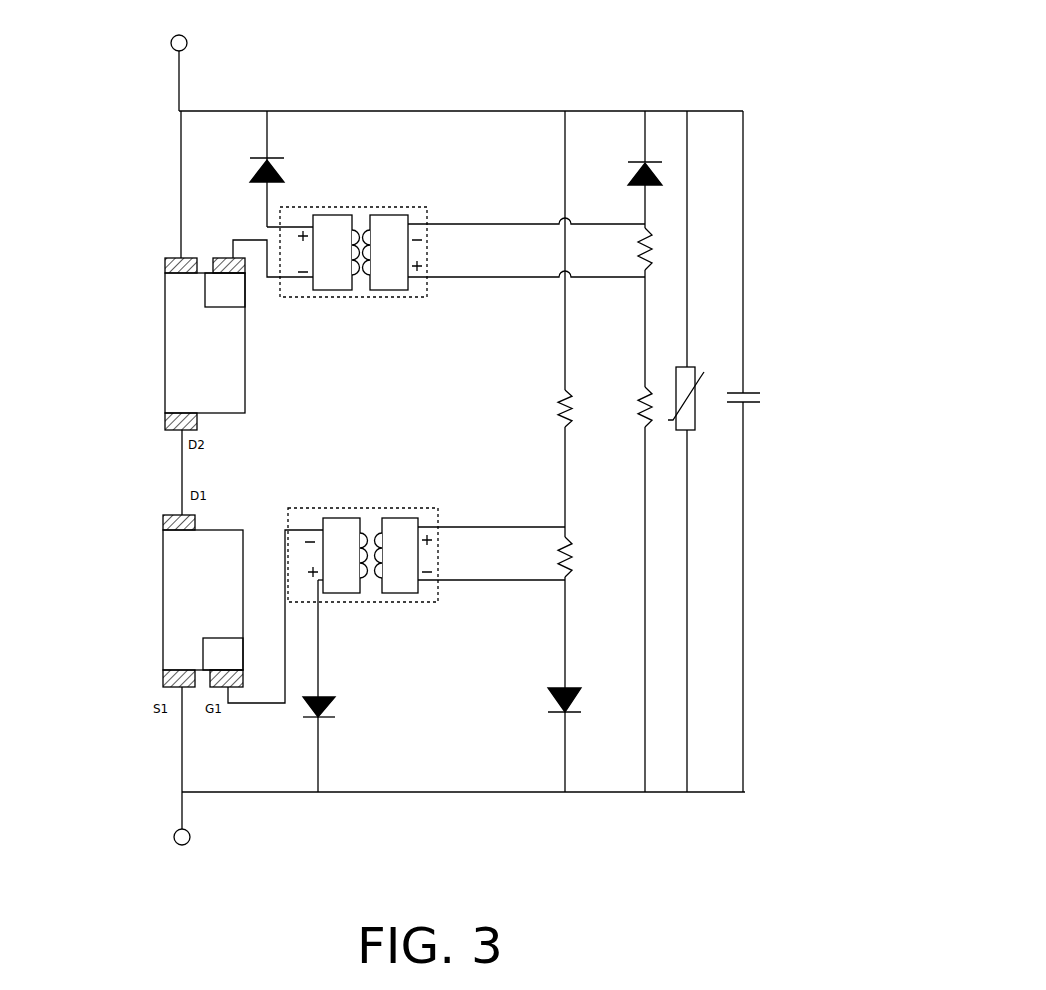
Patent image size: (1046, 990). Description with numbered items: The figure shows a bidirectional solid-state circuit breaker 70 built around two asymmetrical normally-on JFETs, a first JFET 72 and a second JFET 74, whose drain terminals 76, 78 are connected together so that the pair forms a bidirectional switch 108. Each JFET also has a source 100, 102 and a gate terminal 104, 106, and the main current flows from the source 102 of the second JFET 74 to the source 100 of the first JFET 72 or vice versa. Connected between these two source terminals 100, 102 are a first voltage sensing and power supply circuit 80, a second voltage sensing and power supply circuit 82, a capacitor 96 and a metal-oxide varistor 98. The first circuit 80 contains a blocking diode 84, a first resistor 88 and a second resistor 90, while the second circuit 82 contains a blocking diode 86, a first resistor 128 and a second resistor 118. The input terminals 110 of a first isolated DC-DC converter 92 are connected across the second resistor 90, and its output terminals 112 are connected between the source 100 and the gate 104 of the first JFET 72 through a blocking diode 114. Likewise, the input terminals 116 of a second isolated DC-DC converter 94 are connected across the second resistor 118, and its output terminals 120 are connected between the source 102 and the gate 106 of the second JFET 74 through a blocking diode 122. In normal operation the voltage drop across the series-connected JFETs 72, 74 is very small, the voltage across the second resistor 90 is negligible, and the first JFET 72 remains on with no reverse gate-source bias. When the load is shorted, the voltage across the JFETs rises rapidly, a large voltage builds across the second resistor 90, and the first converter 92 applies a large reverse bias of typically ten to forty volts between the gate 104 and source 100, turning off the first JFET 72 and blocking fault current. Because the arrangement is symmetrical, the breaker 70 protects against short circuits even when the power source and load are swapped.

The bidirectional solid-state circuit breaker 70 is at (647, 84).
The first asymmetrical normally-on JFET 72 is at (165, 599).
The second asymmetrical normally-on JFET 74 is at (172, 357).
The drain of first JFET 76 is at (165, 522).
The drain of second JFET 78 is at (165, 422).
The first voltage sensing and power supply circuit 80 is at (760, 561).
The second voltage sensing and power supply circuit 82 is at (755, 266).
The blocking diode 84 is at (565, 686).
The blocking diode 86 is at (645, 160).
The first resistor 88 is at (565, 395).
The second resistor 90 is at (567, 540).
The first isolated DC-DC converter 92 is at (438, 508).
The second isolated DC-DC converter 94 is at (415, 207).
The capacitor 96 is at (753, 392).
The metal-oxide varistor 98 is at (695, 430).
The source of first JFET 100 is at (165, 680).
The source of second JFET 102 is at (165, 262).
The gate terminal of first JFET 104 is at (232, 688).
The gate terminal of second JFET 106 is at (232, 258).
The bidirectional switch 108 is at (144, 310).
The input terminals of first isolated DC-DC converter 110 is at (428, 530).
The output terminals of first isolated DC-DC converter 112 is at (300, 582).
The blocking diode 114 is at (320, 700).
The input terminals of second isolated DC-DC converter 116 is at (428, 225).
The second resistor 118 is at (650, 240).
The output terminals of second isolated DC-DC converter 120 is at (283, 228).
The blocking diode 122 is at (272, 158).
The first resistor 128 is at (640, 420).